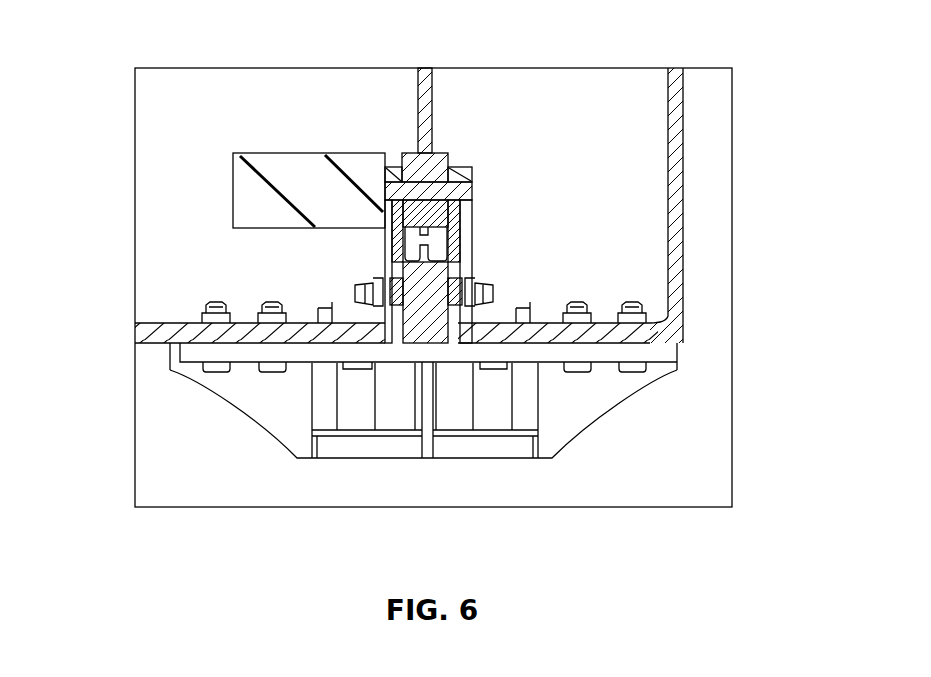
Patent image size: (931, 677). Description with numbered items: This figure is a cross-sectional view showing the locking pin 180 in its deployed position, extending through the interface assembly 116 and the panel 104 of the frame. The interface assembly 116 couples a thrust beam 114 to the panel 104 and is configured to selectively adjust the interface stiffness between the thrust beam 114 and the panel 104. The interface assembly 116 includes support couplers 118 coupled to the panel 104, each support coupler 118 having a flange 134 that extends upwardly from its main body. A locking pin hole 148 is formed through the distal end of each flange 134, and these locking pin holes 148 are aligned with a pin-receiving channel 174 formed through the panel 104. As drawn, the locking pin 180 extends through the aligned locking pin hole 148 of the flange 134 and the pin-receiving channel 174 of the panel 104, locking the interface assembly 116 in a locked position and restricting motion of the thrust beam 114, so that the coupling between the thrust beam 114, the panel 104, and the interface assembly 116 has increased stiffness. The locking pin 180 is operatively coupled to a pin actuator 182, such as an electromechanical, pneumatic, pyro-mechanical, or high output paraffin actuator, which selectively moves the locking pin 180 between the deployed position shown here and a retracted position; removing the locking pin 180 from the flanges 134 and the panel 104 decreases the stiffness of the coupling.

The panel 104 is at (448, 178).
The thrust beam 114 is at (427, 290).
The interface assembly 116 is at (478, 213).
The support coupler 118 is at (390, 327).
The flange 134 is at (393, 176).
The locking pin hole 148 is at (399, 172).
The pin-receiving channel 174 is at (423, 212).
The locking pin 180 is at (430, 172).
The pin actuator 182 is at (233, 190).